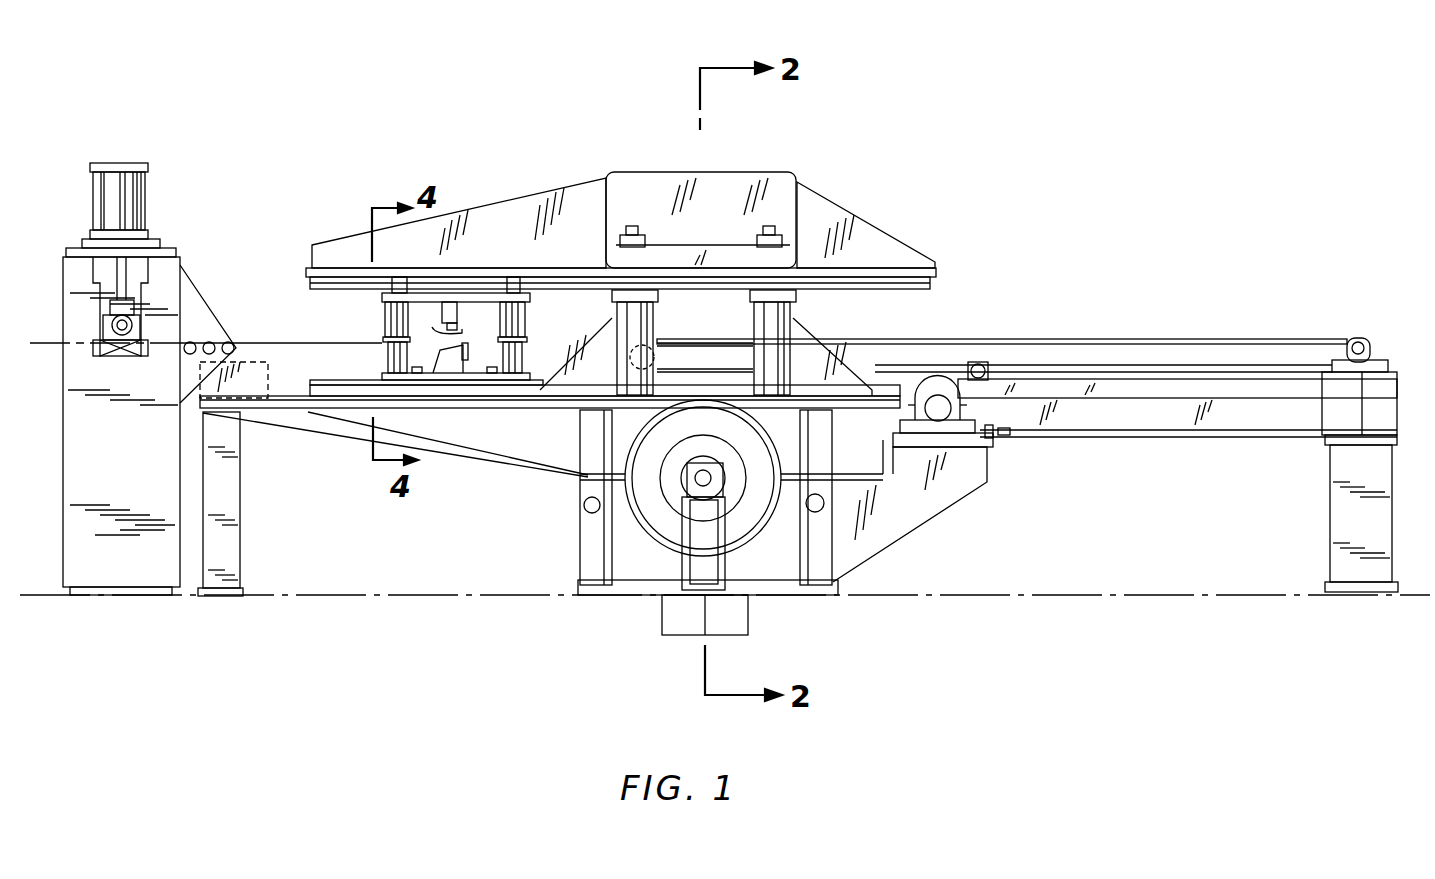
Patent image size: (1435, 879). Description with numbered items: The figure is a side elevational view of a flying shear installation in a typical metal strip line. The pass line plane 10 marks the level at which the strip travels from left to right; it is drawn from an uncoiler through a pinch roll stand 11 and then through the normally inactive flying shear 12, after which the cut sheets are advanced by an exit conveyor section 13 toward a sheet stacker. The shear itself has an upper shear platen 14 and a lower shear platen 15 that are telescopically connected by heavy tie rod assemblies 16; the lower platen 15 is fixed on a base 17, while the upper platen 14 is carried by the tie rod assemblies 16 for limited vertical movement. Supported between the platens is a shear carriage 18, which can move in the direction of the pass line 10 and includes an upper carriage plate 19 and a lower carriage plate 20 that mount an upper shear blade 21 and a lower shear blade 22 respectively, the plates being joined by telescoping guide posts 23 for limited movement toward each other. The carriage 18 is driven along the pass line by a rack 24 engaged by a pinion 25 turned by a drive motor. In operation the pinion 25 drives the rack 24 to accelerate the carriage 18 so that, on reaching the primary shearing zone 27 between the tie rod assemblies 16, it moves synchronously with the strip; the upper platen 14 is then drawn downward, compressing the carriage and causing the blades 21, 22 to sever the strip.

The pass line plane 10 is at (258, 343).
The pinch roll stand 11 is at (117, 156).
The flying shear 12 is at (728, 226).
The exit conveyor section 13 is at (1300, 334).
The upper shear platen 14 is at (558, 208).
The lower shear platen 15 is at (571, 460).
The tie rod assemblies 16 is at (778, 330).
The base 17 is at (628, 558).
The shear carriage 18 is at (418, 324).
The upper carriage plate 19 is at (410, 300).
The lower carriage plate 20 is at (405, 380).
The upper shear blade 21 is at (470, 323).
The lower shear blade 22 is at (476, 348).
The telescoping guide posts 23 is at (389, 357).
The rack 24 is at (910, 395).
The pinion 25 is at (945, 408).
The primary shearing zone 27 is at (712, 326).